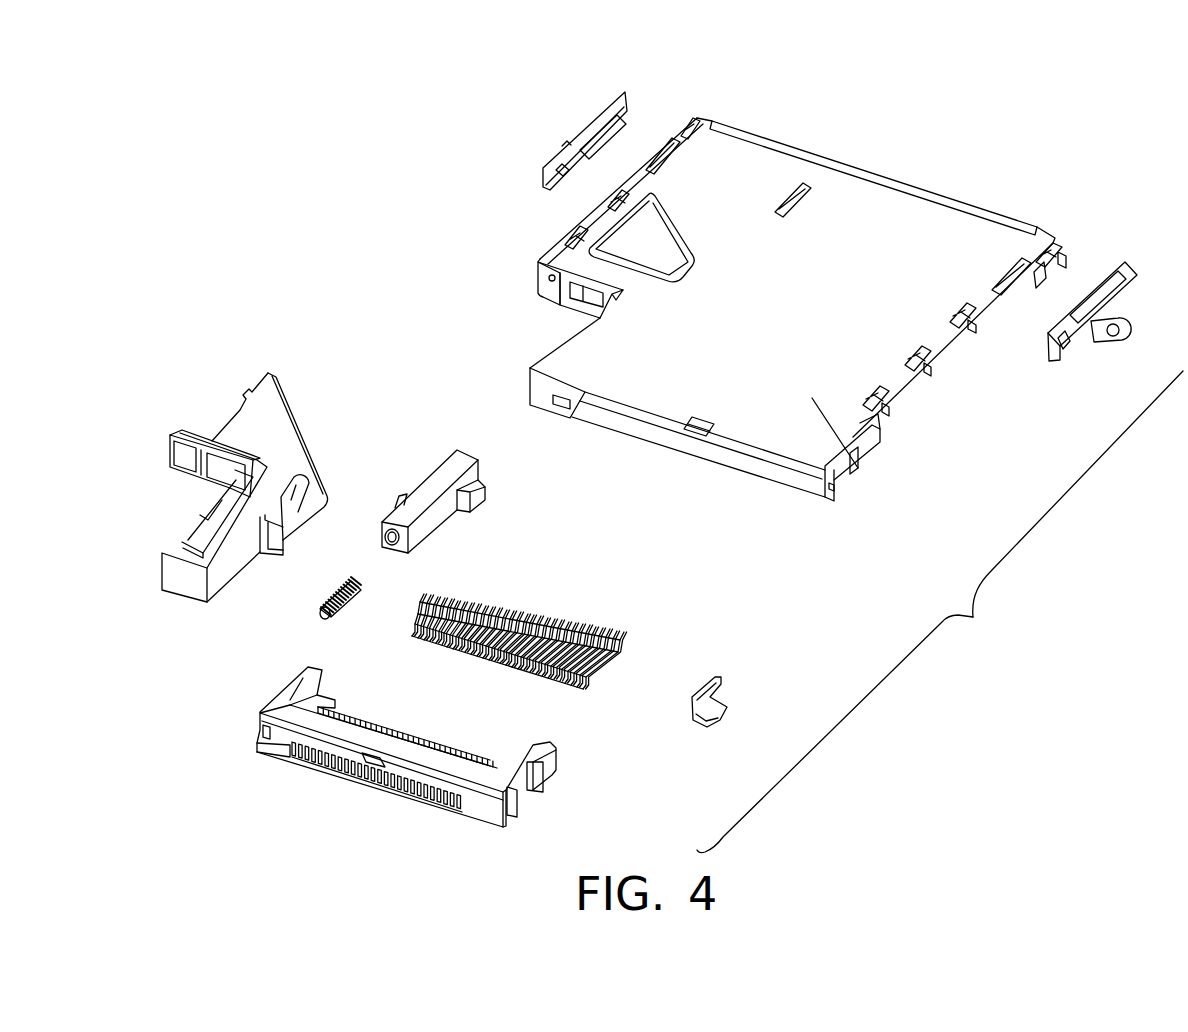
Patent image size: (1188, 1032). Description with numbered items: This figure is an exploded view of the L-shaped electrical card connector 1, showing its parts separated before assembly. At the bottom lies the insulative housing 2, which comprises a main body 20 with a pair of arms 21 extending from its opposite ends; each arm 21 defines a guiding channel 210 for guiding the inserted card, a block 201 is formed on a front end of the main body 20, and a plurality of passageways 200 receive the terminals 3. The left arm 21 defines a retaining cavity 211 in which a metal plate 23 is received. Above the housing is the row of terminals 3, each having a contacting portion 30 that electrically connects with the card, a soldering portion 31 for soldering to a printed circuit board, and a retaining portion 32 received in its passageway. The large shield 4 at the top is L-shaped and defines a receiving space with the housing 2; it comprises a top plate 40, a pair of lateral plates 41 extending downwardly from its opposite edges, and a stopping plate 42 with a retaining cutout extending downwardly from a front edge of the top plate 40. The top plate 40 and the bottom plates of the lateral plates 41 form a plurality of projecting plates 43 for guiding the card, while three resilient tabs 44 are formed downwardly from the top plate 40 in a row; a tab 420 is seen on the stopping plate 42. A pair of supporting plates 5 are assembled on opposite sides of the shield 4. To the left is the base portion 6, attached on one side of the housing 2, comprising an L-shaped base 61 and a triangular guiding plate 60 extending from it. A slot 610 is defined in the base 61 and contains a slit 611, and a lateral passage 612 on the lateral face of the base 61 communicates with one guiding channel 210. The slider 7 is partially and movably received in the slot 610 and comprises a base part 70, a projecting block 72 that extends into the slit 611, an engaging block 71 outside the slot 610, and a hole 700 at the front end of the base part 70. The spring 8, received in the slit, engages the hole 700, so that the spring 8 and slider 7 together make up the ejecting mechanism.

The L-shaped electrical card connector 1 is at (940, 612).
The insulative housing 2 is at (265, 680).
The main body 20 is at (258, 739).
The arms 21 is at (302, 672).
The metal plate 23 is at (722, 700).
The passageways 200 is at (405, 806).
The block 201 is at (366, 785).
The guiding channel 210 is at (310, 698).
The retaining cavity 211 is at (520, 790).
The terminals 3 is at (426, 598).
The contacting portion 30 is at (614, 637).
The soldering portion 31 is at (588, 690).
The retaining portion 32 is at (598, 670).
The shield 4 is at (507, 273).
The top plate 40 is at (845, 452).
The lateral plate 41 is at (1025, 284).
The stopping plate 42 is at (735, 450).
The tab 420 is at (690, 433).
The projecting plate 43 is at (690, 123).
The resilient tabs 44 is at (668, 147).
The supporting plate 5 is at (548, 125).
The base portion 6 is at (207, 419).
The triangular guiding plate 60 is at (287, 430).
The L-shaped base 61 is at (165, 572).
The slot 610 is at (202, 545).
The slit 611 is at (222, 508).
The lateral passage 612 is at (283, 532).
The slider 7 is at (412, 460).
The base part 70 is at (444, 480).
The engaging block 71 is at (483, 498).
The projecting block 72 is at (392, 499).
The hole 700 is at (405, 540).
The spring 8 is at (318, 598).